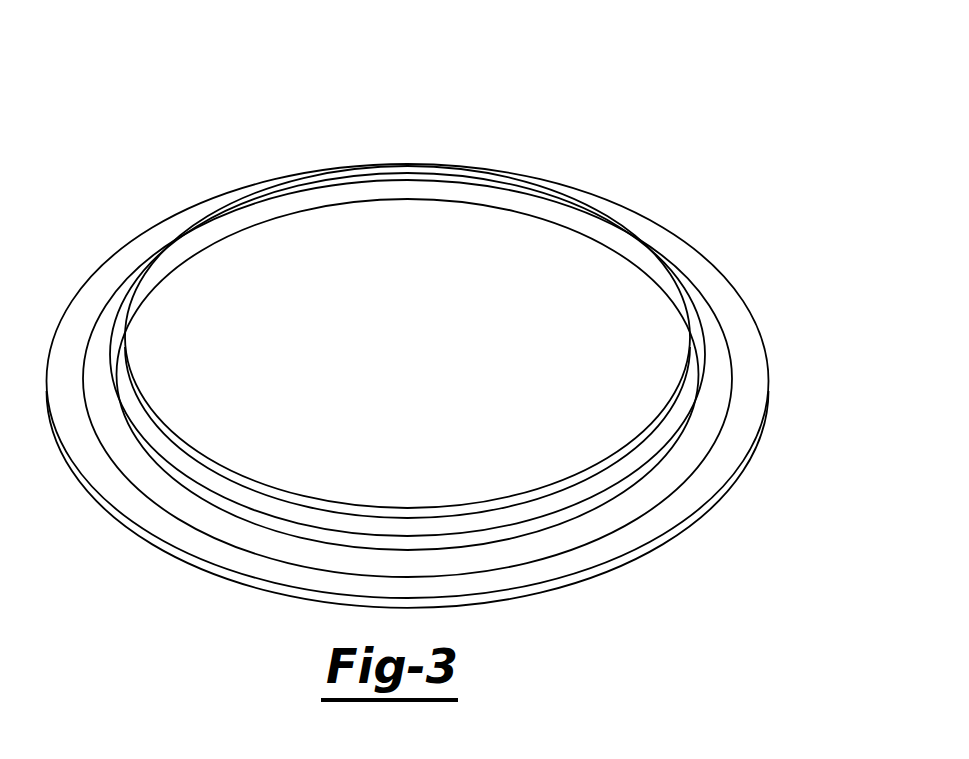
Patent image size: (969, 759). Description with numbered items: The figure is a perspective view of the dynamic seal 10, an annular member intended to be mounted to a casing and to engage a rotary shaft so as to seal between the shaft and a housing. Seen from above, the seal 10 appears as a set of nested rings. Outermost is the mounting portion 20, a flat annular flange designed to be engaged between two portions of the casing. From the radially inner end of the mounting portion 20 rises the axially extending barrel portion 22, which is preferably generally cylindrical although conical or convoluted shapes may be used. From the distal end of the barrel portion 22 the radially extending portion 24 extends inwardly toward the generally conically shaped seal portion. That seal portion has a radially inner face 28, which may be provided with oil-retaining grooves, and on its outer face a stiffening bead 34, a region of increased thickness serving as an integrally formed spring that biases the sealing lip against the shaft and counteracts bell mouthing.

The dynamic seal 10 is at (438, 336).
The mounting portion 20 is at (715, 472).
The axially extending barrel portion 22 is at (598, 527).
The radially extending portion 24 is at (713, 320).
The radially inner face 28 is at (305, 497).
The stiffening bead 34 is at (665, 275).